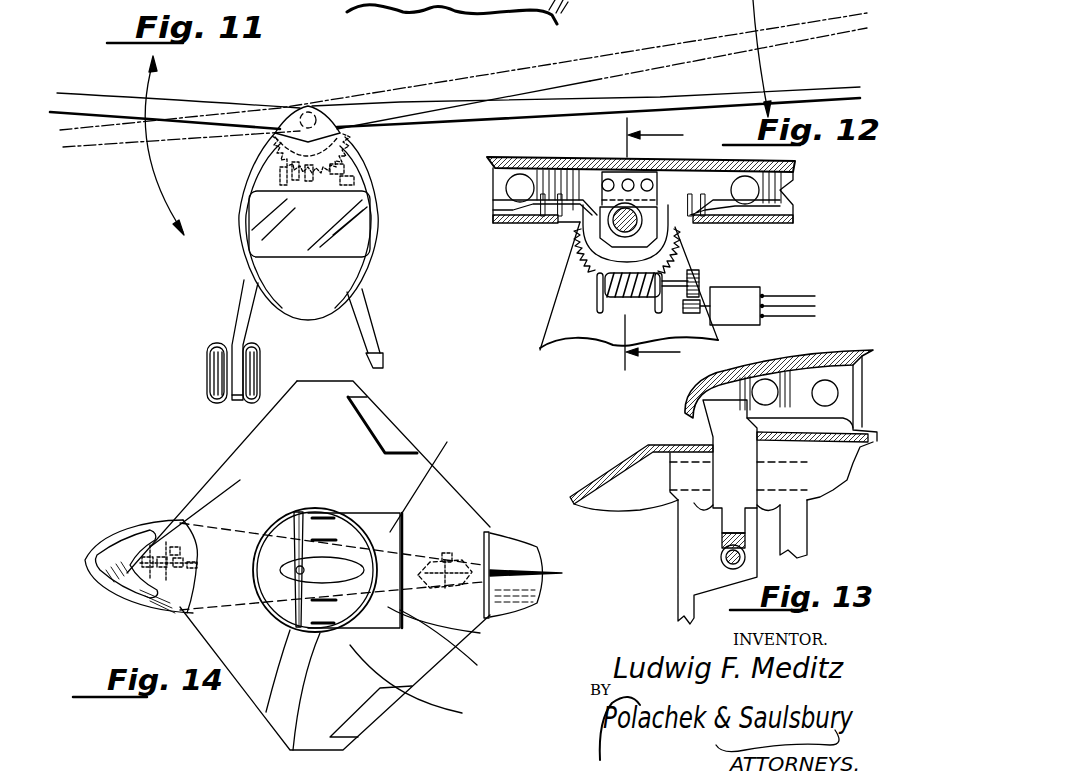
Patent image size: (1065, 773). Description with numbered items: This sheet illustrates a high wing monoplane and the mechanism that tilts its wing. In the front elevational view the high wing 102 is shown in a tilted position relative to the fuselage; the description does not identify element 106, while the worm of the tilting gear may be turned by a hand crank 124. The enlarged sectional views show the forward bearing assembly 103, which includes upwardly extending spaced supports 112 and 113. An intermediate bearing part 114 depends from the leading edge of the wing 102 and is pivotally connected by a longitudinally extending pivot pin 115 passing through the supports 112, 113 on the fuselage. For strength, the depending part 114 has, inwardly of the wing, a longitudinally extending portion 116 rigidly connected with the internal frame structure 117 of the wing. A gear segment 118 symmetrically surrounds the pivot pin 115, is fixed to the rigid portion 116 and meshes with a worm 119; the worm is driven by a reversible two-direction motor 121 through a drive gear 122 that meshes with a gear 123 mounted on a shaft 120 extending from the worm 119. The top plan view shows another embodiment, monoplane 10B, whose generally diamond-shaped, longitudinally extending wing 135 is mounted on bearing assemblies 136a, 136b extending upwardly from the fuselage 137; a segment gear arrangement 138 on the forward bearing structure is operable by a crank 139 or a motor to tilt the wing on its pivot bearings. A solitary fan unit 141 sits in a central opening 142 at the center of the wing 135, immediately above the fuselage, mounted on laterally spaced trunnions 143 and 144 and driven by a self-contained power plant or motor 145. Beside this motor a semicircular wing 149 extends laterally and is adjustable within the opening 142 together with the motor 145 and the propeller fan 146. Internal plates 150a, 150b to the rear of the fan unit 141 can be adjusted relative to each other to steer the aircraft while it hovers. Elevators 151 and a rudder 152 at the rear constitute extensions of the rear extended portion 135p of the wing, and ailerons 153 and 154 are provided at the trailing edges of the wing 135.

In FIG. 11, the high wing 102 is at (245, 108).
In FIG. 13, the high wing 102 is at (770, 366).
In FIG. 12, the bearing assembly 103 is at (540, 323).
In FIG. 13, the bearing assembly 103 is at (671, 538).
In FIG. 11, the cockpit windshield 106 is at (352, 237).
In FIG. 12, the support 112 is at (577, 313).
In FIG. 13, the support 112 is at (688, 568).
In FIG. 13, the support 113 is at (793, 538).
In FIG. 13, the intermediate bearing part 114 is at (728, 437).
In FIG. 12, the pivot pin 115 is at (615, 228).
In FIG. 13, the pivot pin 115 is at (690, 475).
In FIG. 13, the longitudinally extending portion 116 is at (793, 410).
In FIG. 13, the internal frame structure 117 is at (826, 383).
In FIG. 12, the gear segment 118 is at (577, 240).
In FIG. 12, the worm 119 is at (617, 290).
In FIG. 12, the shaft 120 is at (677, 292).
In FIG. 12, the reversible two-direction motor 121 is at (753, 292).
In FIG. 12, the drive gear 122 is at (696, 298).
In FIG. 12, the gear 123 is at (690, 275).
In FIG. 11, the hand crank 124 is at (345, 163).
In FIG. 14, the wing 135 is at (267, 452).
In FIG. 14, the rear extended portion of the wing 135p is at (463, 615).
In FIG. 14, the bearing assembly 136a is at (170, 608).
In FIG. 14, the bearing assembly 136b is at (445, 557).
In FIG. 14, the fuselage 137 is at (103, 587).
In FIG. 14, the segment gear arrangement 138 is at (190, 567).
In FIG. 14, the crank 139 is at (193, 560).
In FIG. 14, the solitary fan unit 141 is at (348, 503).
In FIG. 14, the central opening 142 is at (263, 703).
In FIG. 14, the trunnion 143 is at (283, 733).
In FIG. 14, the trunnion 144 is at (320, 503).
In FIG. 14, the self-contained power plant or motor 145 is at (382, 607).
In FIG. 14, the propeller fan 146 is at (292, 512).
In FIG. 14, the semicircular wing 149 is at (357, 620).
In FIG. 14, the internal plate 150a is at (463, 615).
In FIG. 14, the internal plate 150b is at (439, 477).
In FIG. 14, the elevators 151 is at (530, 597).
In FIG. 14, the rudder 152 is at (515, 573).
In FIG. 14, the aileron 153 is at (358, 717).
In FIG. 14, the aileron 154 is at (373, 422).
In FIG. 14, the monoplane 10B is at (475, 398).